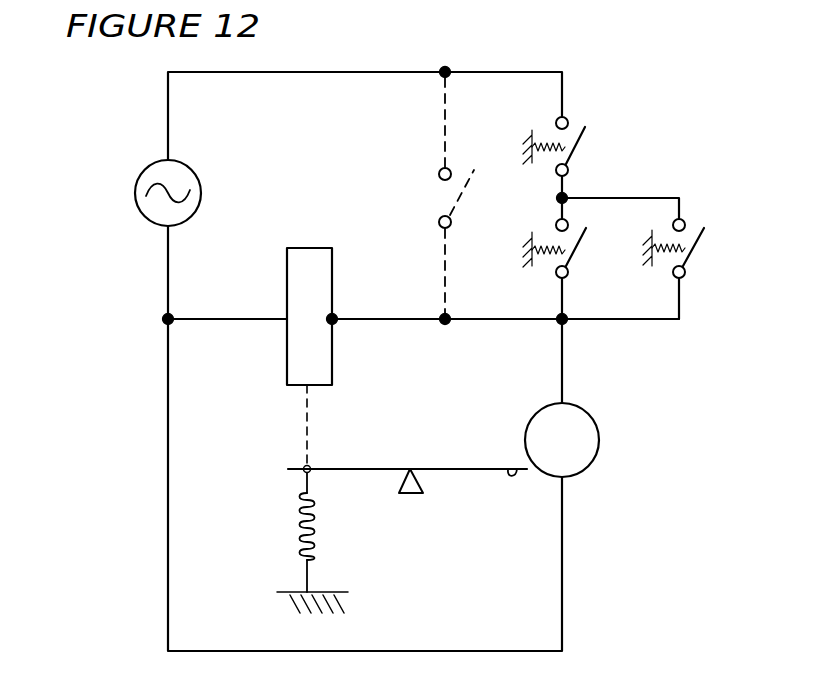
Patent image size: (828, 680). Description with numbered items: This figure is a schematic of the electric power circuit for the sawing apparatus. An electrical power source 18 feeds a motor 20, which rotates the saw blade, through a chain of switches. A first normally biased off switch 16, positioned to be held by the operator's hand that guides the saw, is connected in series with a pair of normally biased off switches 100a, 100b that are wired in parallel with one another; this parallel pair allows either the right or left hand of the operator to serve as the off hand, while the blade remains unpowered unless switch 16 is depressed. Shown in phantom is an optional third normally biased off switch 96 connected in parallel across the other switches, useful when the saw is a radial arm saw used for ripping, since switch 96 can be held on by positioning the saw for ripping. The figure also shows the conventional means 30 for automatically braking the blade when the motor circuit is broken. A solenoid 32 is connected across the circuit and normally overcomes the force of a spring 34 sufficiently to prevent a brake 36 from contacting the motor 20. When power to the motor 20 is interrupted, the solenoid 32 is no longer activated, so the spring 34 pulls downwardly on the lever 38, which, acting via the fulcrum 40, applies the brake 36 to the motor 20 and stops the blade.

The first normally biased off switch 16 is at (580, 145).
The electrical power source 18 is at (133, 198).
The motor 20 is at (586, 410).
The means for automatically braking the blade 30 is at (268, 393).
The solenoid 32 is at (307, 260).
The spring 34 is at (318, 525).
The brake 36 is at (508, 470).
The lever 38 is at (346, 469).
The fulcrum 40 is at (412, 469).
The third normally biased off switch 96 is at (466, 188).
The normally biased off switch 100a is at (686, 262).
The normally biased off switch 100b is at (562, 259).